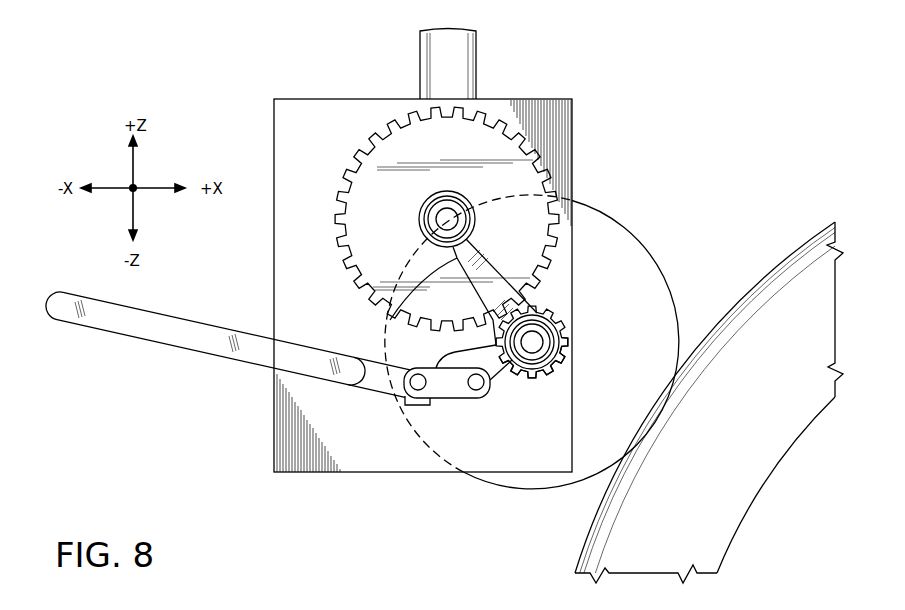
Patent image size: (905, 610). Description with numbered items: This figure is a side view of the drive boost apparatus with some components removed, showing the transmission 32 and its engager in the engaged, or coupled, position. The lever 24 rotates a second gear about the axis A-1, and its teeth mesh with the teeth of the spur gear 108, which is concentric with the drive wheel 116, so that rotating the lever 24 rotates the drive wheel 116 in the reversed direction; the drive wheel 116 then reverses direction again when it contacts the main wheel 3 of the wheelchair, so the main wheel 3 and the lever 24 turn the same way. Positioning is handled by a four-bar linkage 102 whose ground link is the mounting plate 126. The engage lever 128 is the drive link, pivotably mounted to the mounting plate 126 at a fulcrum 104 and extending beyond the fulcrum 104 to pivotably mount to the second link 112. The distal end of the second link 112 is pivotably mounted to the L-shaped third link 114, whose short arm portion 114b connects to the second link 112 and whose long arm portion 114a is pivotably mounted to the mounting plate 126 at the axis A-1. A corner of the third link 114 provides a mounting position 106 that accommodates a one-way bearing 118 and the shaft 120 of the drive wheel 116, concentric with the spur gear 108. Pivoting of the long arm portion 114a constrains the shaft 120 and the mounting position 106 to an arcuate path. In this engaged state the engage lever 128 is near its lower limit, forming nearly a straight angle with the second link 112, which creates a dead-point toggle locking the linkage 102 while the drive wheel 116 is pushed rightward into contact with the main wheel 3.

The transmission 32 is at (246, 115).
The linkage 102 is at (305, 441).
The lever 24 is at (468, 69).
The mounting plate 126 is at (317, 112).
The axis of the second gear A-1 is at (442, 218).
The third link 114 is at (487, 268).
The long arm portion 114a is at (390, 321).
The short arm portion 114b is at (507, 370).
The second link 112 is at (447, 397).
The engage lever 128 is at (157, 314).
The fulcrum 104 is at (323, 367).
The mounting position 106 is at (566, 328).
The spur gear 108 is at (550, 382).
The one-way bearing 118 is at (547, 348).
The shaft 120 is at (537, 340).
The drive wheel 116 is at (510, 490).
The main wheel 3 is at (778, 308).